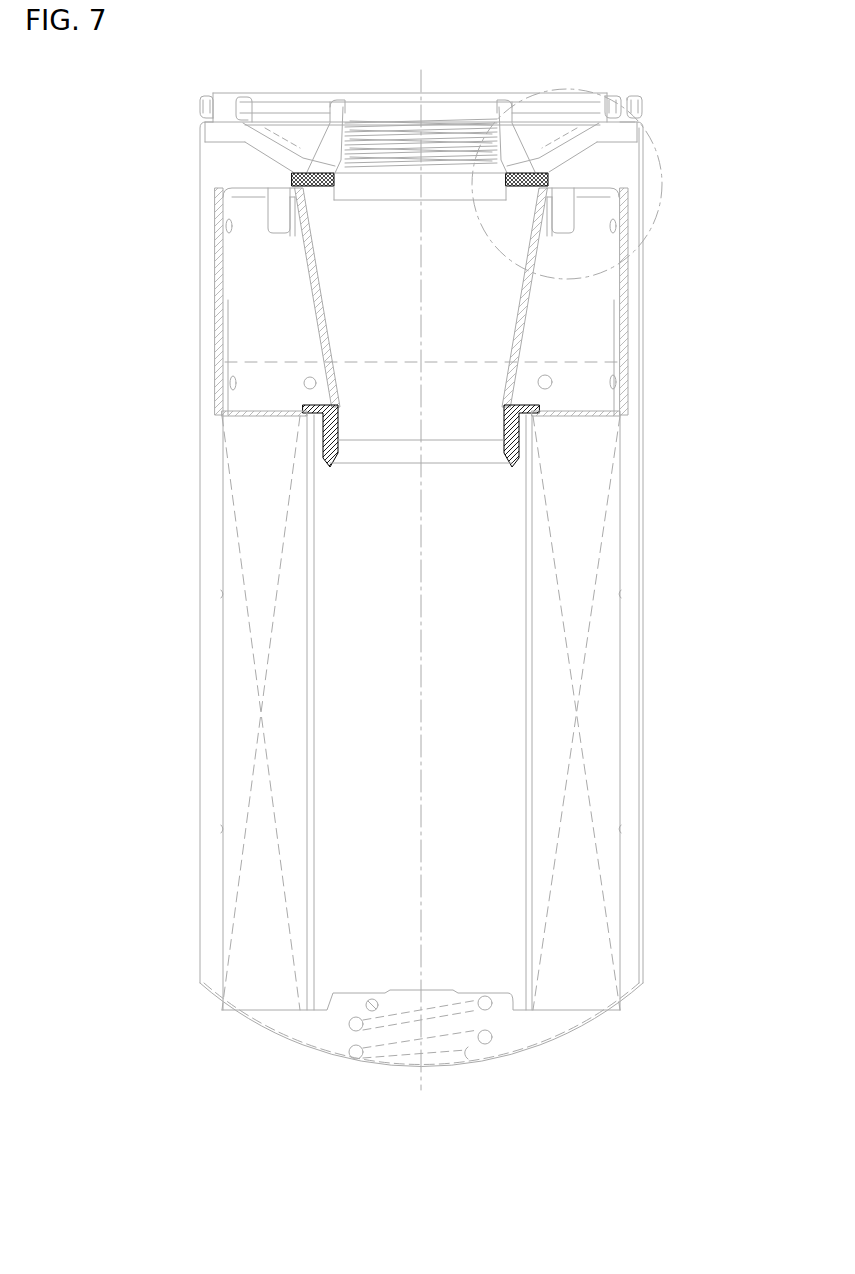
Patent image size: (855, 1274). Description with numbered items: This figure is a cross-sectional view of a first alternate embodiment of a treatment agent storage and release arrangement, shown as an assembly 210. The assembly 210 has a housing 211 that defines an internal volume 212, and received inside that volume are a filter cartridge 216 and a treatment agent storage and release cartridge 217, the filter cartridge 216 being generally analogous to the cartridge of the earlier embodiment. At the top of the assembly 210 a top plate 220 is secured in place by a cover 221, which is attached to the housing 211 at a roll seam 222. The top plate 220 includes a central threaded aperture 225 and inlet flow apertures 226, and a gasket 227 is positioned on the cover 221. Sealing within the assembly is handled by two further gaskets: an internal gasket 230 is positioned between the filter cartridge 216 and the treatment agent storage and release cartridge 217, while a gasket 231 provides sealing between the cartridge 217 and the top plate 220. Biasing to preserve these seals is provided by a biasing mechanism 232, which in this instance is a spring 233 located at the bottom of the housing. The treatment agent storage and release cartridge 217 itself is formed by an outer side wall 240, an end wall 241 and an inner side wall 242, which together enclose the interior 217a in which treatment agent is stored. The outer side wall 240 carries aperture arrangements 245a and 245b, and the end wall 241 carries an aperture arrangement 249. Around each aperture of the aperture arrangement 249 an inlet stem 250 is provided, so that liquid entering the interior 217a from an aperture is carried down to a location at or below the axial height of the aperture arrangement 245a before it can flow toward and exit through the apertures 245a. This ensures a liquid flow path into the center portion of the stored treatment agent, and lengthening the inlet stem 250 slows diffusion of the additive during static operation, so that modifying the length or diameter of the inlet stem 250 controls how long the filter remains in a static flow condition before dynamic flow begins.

The assembly 210 is at (662, 341).
The housing 211 is at (641, 515).
The internal volume 212 is at (636, 610).
The filter cartridge 216 is at (585, 692).
The treatment agent storage and release cartridge 217 is at (217, 305).
The interior of cartridge 217a is at (616, 304).
The top plate 220 is at (259, 121).
The cover 221 is at (594, 103).
The roll seam 222 is at (640, 103).
The threaded aperture 225 is at (431, 133).
The inlet flow apertures 226 is at (288, 137).
The gasket 227 is at (226, 98).
The internal gasket 230 is at (331, 451).
The gasket 231 is at (354, 183).
The biasing mechanism 232 is at (371, 1053).
The spring 233 is at (472, 1041).
The outer side wall 240 is at (624, 273).
The end wall 241 is at (608, 185).
The inner side wall 242 is at (333, 313).
The aperture arrangement 245a is at (226, 228).
The aperture arrangement 245b is at (237, 382).
The aperture arrangement 249 is at (280, 213).
The inlet stem 250 is at (295, 231).